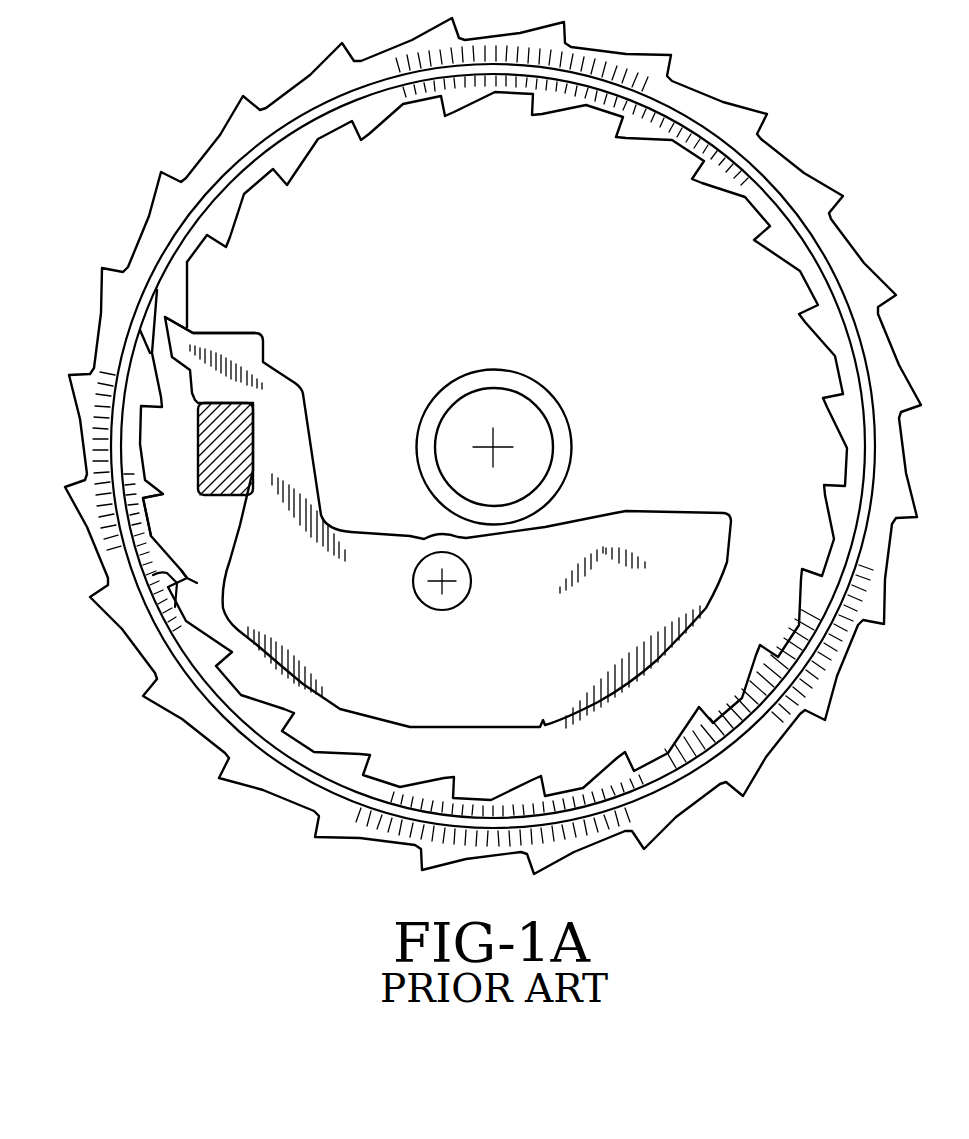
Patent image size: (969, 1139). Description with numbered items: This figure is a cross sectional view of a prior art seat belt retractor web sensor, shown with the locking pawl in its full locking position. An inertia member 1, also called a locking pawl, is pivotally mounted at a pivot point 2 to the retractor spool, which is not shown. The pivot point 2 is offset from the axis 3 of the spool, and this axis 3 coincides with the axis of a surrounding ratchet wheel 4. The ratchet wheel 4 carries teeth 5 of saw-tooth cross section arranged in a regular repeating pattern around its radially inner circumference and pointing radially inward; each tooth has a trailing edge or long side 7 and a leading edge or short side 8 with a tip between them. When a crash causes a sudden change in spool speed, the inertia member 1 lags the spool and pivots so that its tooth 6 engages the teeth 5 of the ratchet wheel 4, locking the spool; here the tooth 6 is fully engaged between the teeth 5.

The inertia member 1 is at (370, 663).
The pivot point 2 is at (443, 582).
The axis 3 is at (494, 447).
The ratchet wheel 4 is at (280, 718).
The teeth 5 is at (197, 583).
The tooth 6 is at (182, 333).
The trailing edge or long side 7 is at (162, 553).
The leading edge or short side 8 is at (153, 575).